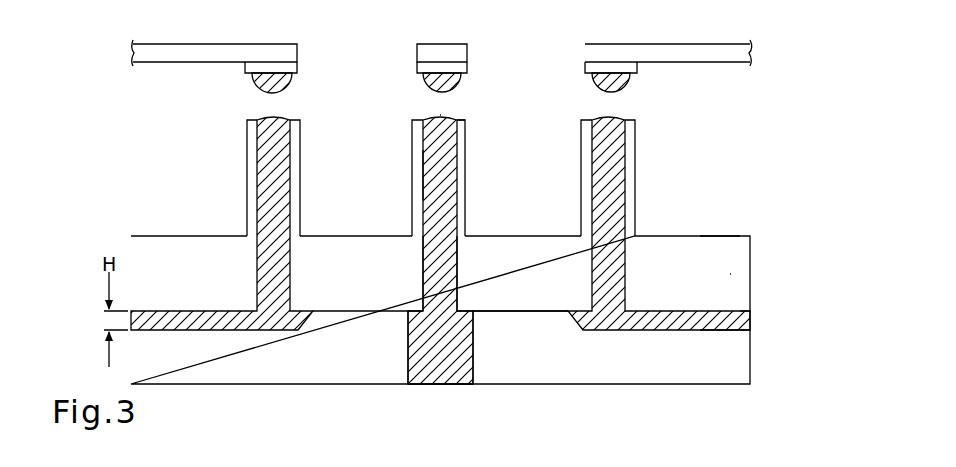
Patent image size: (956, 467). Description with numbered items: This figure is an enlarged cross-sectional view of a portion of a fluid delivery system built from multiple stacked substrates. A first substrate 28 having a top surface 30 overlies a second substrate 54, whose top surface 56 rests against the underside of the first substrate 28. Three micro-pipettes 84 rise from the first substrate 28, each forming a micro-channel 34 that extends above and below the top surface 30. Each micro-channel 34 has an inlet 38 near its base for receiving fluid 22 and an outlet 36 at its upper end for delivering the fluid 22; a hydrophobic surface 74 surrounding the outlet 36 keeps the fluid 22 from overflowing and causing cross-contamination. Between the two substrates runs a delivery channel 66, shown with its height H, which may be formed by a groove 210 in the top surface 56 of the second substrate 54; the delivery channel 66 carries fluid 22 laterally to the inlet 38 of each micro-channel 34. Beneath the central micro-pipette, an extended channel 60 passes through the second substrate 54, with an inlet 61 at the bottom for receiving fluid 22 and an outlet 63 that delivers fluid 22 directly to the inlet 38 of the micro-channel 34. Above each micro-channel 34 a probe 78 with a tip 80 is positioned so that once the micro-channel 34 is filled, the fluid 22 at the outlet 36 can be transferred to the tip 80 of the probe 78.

The fluid 22 is at (262, 79).
The first substrate 28 is at (732, 274).
The top surface 30 is at (712, 236).
The micro-channel 34 is at (437, 175).
The outlet 36 is at (450, 120).
The inlet 38 is at (445, 300).
The second substrate 54 is at (722, 367).
The top surface 56 is at (512, 310).
The extended channel 60 is at (458, 353).
The inlet 61 is at (457, 384).
The outlet 63 is at (453, 300).
The delivery channel 66 is at (723, 328).
The hydrophobic surface 74 is at (463, 120).
The probe 78 is at (199, 48).
The tip 80 is at (292, 64).
The micro-pipette 84 is at (243, 168).
The groove 210 is at (752, 323).